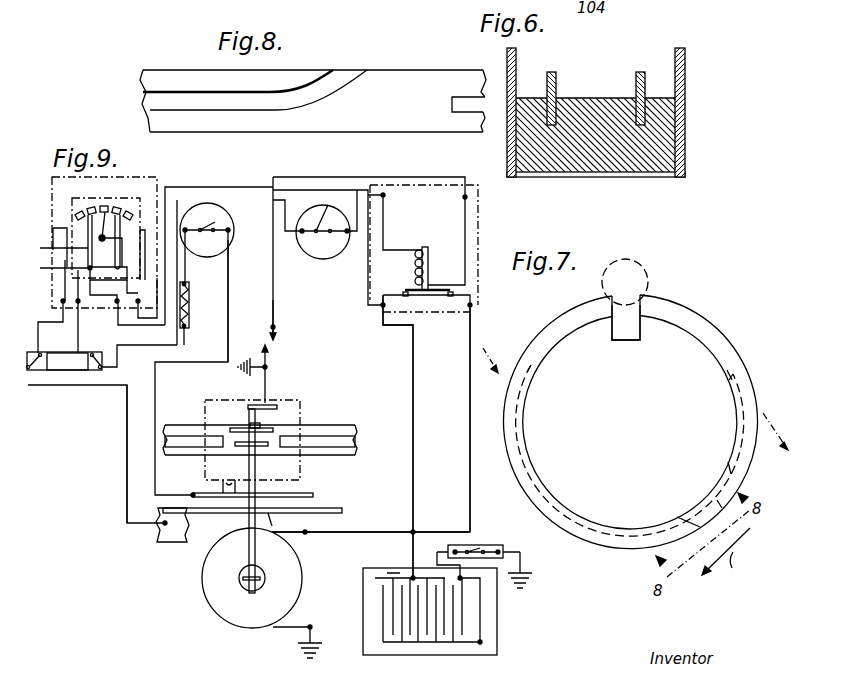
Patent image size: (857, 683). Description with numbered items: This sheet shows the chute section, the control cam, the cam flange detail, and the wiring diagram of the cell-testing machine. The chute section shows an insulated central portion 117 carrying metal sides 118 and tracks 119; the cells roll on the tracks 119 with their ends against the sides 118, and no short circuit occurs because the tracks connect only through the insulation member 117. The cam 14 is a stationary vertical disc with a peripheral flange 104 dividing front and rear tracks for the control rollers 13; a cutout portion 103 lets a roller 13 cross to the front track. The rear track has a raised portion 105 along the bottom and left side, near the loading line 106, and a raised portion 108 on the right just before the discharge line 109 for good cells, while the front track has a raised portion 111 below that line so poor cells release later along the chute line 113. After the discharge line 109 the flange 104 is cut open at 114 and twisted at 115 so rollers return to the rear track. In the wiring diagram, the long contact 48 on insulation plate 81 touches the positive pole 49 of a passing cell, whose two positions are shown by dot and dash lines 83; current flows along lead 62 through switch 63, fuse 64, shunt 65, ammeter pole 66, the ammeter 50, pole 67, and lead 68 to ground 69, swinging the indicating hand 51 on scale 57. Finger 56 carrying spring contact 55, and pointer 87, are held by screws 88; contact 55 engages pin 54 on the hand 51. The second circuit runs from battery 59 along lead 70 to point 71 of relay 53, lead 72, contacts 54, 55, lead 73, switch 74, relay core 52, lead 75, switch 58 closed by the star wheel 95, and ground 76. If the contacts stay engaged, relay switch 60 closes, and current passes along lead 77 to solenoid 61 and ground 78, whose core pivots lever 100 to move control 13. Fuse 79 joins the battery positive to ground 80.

In FIG. 7, the control 13 is at (642, 276).
In FIG. 9, the control 13 is at (236, 427).
In FIG. 8, the cam 14 is at (178, 73).
In FIG. 7, the cam 14 is at (561, 340).
In FIG. 9, the cam 14 is at (338, 427).
In FIG. 9, the long contact 48 is at (308, 494).
In FIG. 9, the positive pole 49 is at (286, 524).
In FIG. 9, the ammeter 50 is at (113, 207).
In FIG. 9, the indicating hand 51 is at (107, 207).
In FIG. 9, the core 52 is at (430, 259).
In FIG. 9, the relay 53 is at (434, 297).
In FIG. 9, the contact 54 is at (100, 240).
In FIG. 9, the contact 55 is at (100, 237).
In FIG. 9, the hand 56 is at (53, 250).
In FIG. 9, the scale 57 is at (83, 207).
In FIG. 9, the switch 58 is at (286, 326).
In FIG. 9, the battery 59 is at (395, 656).
In FIG. 9, the switch 60 is at (411, 297).
In FIG. 9, the solenoid 61 is at (202, 588).
In FIG. 9, the lead 62 is at (229, 302).
In FIG. 9, the switch 63 is at (207, 230).
In FIG. 9, the fuse 64 is at (189, 296).
In FIG. 9, the shunt 65 is at (55, 372).
In FIG. 9, the pole of the ammeter 66 is at (140, 244).
In FIG. 9, the pole of the ammeter 67 is at (100, 238).
In FIG. 9, the lead 68 is at (127, 448).
In FIG. 9, the ground 69 is at (183, 545).
In FIG. 9, the lead 70 is at (413, 490).
In FIG. 9, the point 71 is at (382, 310).
In FIG. 9, the lead 72 is at (303, 178).
In FIG. 9, the lead 73 is at (213, 190).
In FIG. 9, the switch 74 is at (323, 224).
In FIG. 9, the lead 75 is at (371, 185).
In FIG. 9, the ground connection 76 is at (253, 370).
In FIG. 9, the lead 77 is at (470, 446).
In FIG. 9, the ground connection 78 is at (288, 630).
In FIG. 9, the fuse 79 is at (480, 546).
In FIG. 9, the ground connection 80 is at (524, 556).
In FIG. 9, the insulation plate 81 is at (343, 512).
In FIG. 9, the dot and dash lines 83 is at (250, 398).
In FIG. 9, the pointer 87 is at (122, 207).
In FIG. 9, the screws 88 is at (55, 270).
In FIG. 9, the star wheel 95 is at (272, 405).
In FIG. 9, the lever 100 is at (257, 468).
In FIG. 7, the cutout portion 103 is at (650, 300).
In FIG. 9, the cutout portion 103 is at (295, 433).
In FIG. 7, the peripheral flange 104 is at (573, 311).
In FIG. 9, the peripheral flange 104 is at (355, 438).
In FIG. 7, the raised portion 105 is at (521, 434).
In FIG. 9, the dot and dash lines 106 is at (492, 372).
In FIG. 7, the raised portion 108 is at (733, 378).
In FIG. 7, the line of discharge 109 is at (773, 437).
In FIG. 7, the raised portion 111 is at (730, 470).
In FIG. 7, the dot and dash lines 113 is at (735, 551).
In FIG. 8, the opened portion 114 is at (400, 85).
In FIG. 7, the opened portion 114 is at (707, 501).
In FIG. 8, the twisted portion 115 is at (337, 80).
In FIG. 7, the twisted portion 115 is at (687, 517).
In FIG. 6, the central portion 117 is at (568, 173).
In FIG. 6, the sides 118 is at (516, 58).
In FIG. 6, the tracks 119 is at (560, 66).